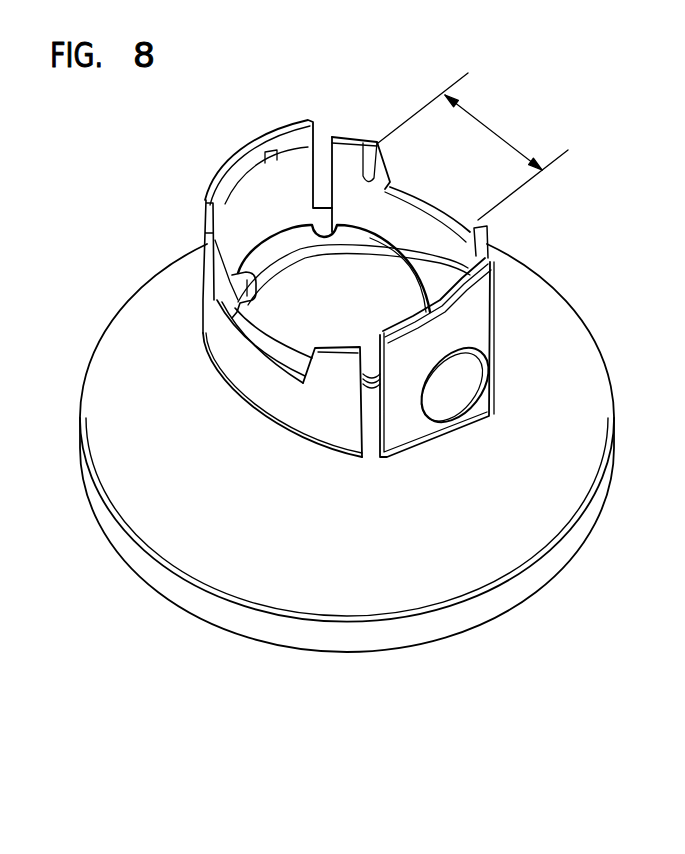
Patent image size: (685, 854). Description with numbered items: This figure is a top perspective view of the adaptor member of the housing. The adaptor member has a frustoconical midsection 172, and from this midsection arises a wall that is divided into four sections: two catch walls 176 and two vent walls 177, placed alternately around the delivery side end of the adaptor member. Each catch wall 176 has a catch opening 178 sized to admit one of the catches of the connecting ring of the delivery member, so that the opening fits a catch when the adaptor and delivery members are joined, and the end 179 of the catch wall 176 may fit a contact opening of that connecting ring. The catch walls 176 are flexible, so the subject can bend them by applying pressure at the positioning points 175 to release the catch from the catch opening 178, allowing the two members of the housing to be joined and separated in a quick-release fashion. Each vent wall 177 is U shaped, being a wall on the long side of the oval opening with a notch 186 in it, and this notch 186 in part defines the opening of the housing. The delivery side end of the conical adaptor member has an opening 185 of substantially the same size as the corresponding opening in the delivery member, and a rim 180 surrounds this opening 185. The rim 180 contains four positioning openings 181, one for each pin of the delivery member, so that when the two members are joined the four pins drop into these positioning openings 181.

The frustoconical midsection 172 is at (565, 343).
The positioning element 175 is at (458, 390).
The catch wall 176 is at (400, 416).
The vent wall 177 is at (332, 408).
The catch opening 178 is at (315, 150).
The end of catch wall 179 is at (260, 137).
The rim 180 is at (278, 347).
The positioning opening 181 is at (248, 300).
The opening 185 is at (367, 317).
The notch 186 is at (487, 125).